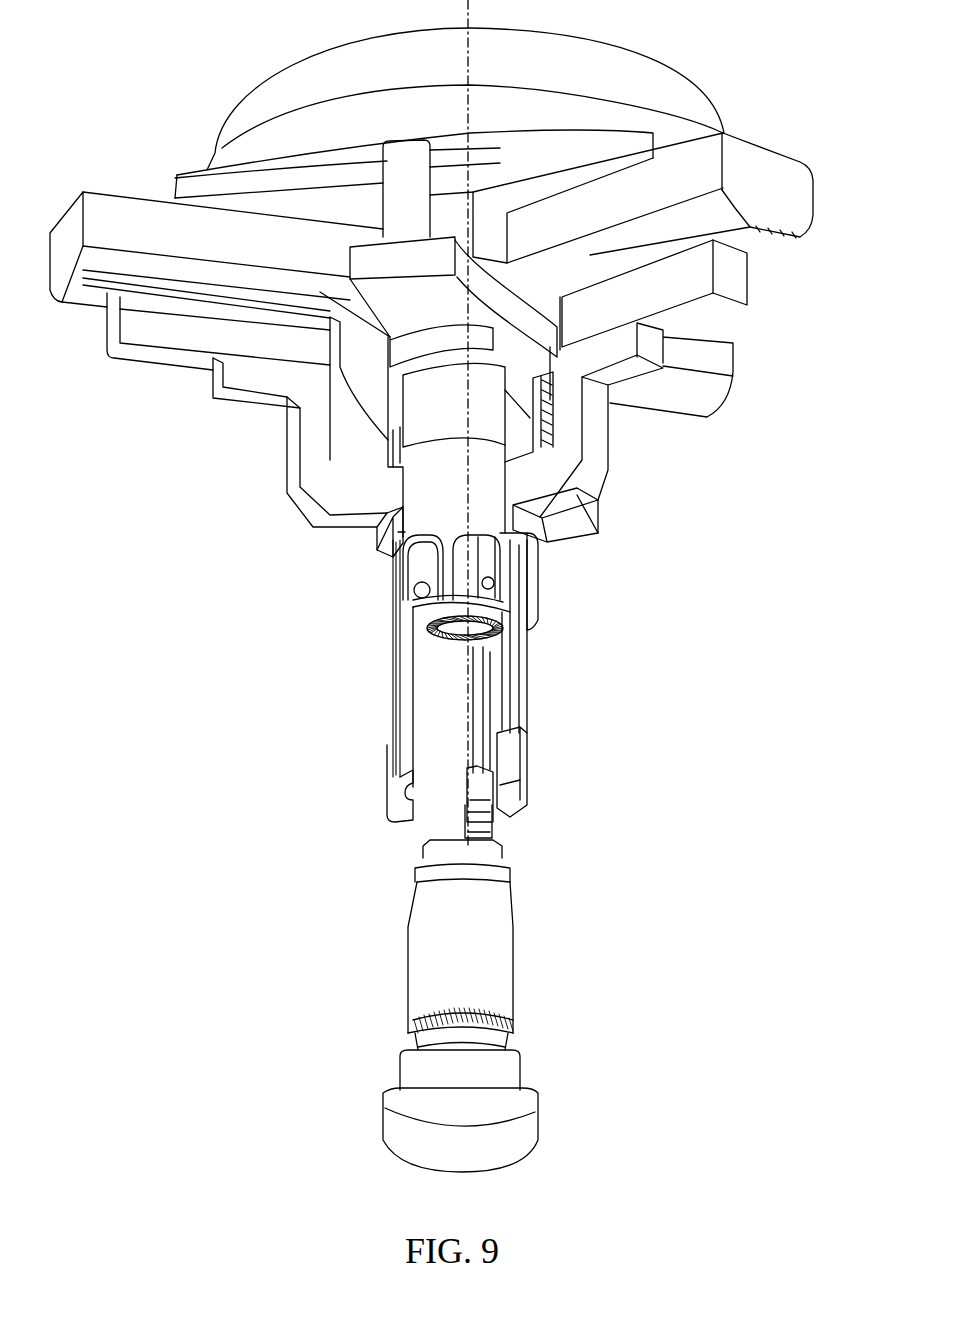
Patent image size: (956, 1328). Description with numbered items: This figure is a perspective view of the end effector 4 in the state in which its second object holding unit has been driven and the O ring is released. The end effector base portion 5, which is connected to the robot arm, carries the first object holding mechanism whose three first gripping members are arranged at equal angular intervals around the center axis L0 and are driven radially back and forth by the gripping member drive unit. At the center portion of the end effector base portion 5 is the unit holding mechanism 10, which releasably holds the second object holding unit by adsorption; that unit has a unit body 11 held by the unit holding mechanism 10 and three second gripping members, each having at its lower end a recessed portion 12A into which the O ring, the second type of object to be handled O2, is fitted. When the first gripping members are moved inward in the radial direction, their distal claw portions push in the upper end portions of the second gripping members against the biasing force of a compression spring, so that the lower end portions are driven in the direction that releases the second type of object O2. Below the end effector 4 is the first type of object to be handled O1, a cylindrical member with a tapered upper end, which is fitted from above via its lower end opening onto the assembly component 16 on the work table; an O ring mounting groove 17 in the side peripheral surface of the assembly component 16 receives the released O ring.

The end effector 4 is at (156, 106).
The end effector base portion 5 is at (672, 92).
The unit holding mechanism 10 is at (423, 423).
The unit body 11 is at (527, 540).
The recessed portion 12A is at (498, 788).
The center axis L0 is at (455, 813).
The second type of object to be handled O2 is at (510, 877).
The first type of object to be handled O1 is at (505, 963).
The O ring mounting groove 17 is at (515, 1043).
The assembly component 16 is at (510, 1083).